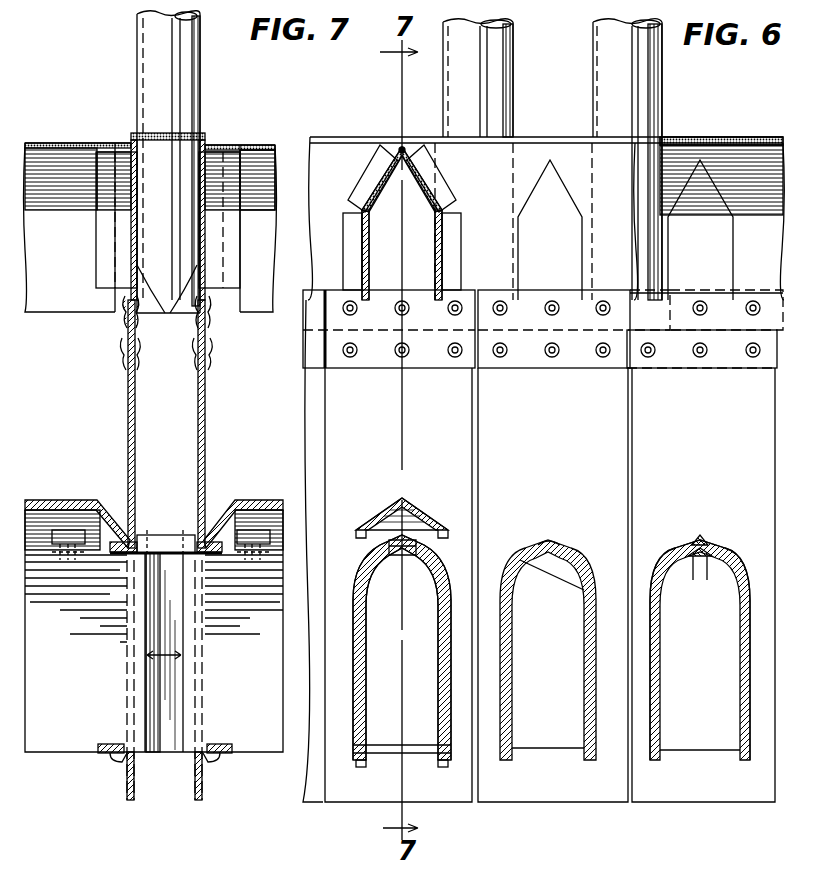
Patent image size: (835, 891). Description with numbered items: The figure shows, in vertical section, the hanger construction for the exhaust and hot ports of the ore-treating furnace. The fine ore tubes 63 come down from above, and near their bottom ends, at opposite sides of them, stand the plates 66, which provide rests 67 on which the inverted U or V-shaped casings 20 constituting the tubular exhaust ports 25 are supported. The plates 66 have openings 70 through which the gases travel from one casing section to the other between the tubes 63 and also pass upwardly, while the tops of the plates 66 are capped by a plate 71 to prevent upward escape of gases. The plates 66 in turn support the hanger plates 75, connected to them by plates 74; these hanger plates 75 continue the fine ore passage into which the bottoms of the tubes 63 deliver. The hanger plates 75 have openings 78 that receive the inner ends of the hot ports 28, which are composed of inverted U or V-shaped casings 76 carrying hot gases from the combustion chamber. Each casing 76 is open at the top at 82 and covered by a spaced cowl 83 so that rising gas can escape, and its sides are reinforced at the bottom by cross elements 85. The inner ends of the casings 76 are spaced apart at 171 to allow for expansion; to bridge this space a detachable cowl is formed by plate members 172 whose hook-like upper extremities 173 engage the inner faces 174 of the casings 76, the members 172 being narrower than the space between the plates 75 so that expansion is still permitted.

In FIG. 7, the inverted U or V-shaped casing 20 is at (52, 142).
In FIG. 6, the inverted U or V-shaped casing 20 is at (428, 160).
In FIG. 7, the tubular exhaust port 25 is at (262, 178).
In FIG. 6, the tubular exhaust port 25 is at (543, 248).
In FIG. 6, the hot port 28 is at (408, 605).
In FIG. 7, the tube 63 is at (158, 36).
In FIG. 6, the tube 63 is at (612, 30).
In FIG. 6, the plate 66 is at (575, 148).
In FIG. 7, the rest 67 is at (100, 177).
In FIG. 6, the rest 67 is at (368, 162).
In FIG. 7, the opening 70 is at (167, 302).
In FIG. 6, the opening 70 is at (540, 195).
In FIG. 7, the plate 71 is at (190, 134).
In FIG. 6, the plate 71 is at (690, 140).
In FIG. 7, the plate 74 is at (124, 330).
In FIG. 6, the plate 74 is at (372, 360).
In FIG. 7, the hanger plate 75 is at (132, 428).
In FIG. 6, the hanger plate 75 is at (346, 790).
In FIG. 7, the casing 76 is at (57, 718).
In FIG. 6, the casing 76 is at (365, 697).
In FIG. 7, the opening 78 is at (128, 538).
In FIG. 6, the opening 78 is at (452, 660).
In FIG. 7, the open top 82 is at (40, 545).
In FIG. 6, the open top 82 is at (406, 545).
In FIG. 7, the cover or cowl 83 is at (40, 500).
In FIG. 6, the cover or cowl 83 is at (404, 514).
In FIG. 7, the cross element 85 is at (104, 755).
In FIG. 6, the cross element 85 is at (392, 750).
In FIG. 7, the space 171 is at (165, 657).
In FIG. 7, the plate member 172 is at (163, 745).
In FIG. 6, the plate member 172 is at (652, 588).
In FIG. 7, the hook-like upper extremity 173 is at (160, 545).
In FIG. 6, the hook-like upper extremity 173 is at (705, 540).
In FIG. 7, the inner face 174 is at (183, 528).
In FIG. 6, the inner face 174 is at (706, 580).